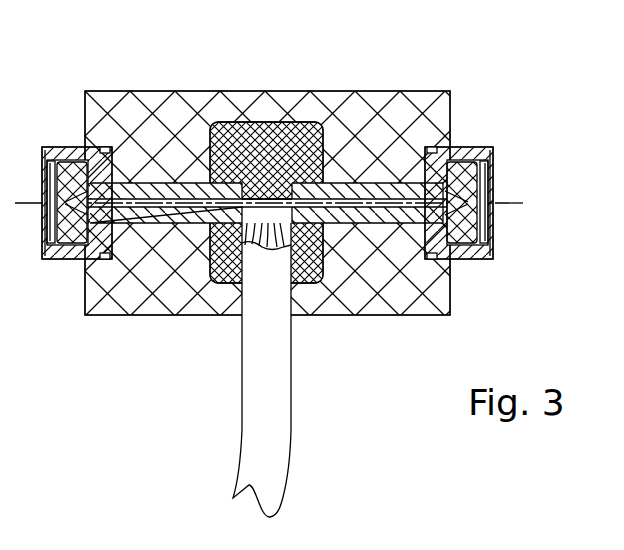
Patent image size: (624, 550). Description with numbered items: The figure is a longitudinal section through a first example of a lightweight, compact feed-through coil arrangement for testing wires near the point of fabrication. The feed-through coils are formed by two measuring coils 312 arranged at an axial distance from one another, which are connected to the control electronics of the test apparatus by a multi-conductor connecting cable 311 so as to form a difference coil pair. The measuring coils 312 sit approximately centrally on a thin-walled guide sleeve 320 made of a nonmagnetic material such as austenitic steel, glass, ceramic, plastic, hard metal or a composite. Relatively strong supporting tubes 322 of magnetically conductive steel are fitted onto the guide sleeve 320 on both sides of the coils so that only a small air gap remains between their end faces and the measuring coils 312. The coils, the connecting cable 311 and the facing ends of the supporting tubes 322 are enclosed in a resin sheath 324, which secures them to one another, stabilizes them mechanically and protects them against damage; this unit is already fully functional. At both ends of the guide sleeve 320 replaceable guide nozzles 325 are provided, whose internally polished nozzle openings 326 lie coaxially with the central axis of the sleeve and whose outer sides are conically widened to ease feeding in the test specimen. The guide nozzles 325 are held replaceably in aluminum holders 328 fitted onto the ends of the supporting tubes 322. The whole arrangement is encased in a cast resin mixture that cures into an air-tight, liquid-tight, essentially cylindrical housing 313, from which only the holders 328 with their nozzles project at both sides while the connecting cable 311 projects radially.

The multi-conductor connecting cable 311 is at (272, 470).
The measuring coils 312 is at (268, 182).
The housing 313 is at (427, 295).
The guide sleeve 320 is at (393, 183).
The supporting tubes 322 is at (178, 188).
The resin sheath 324 is at (245, 152).
The guide nozzles 325 is at (73, 173).
The nozzle openings 326 is at (470, 200).
The aluminum holders 328 is at (62, 245).